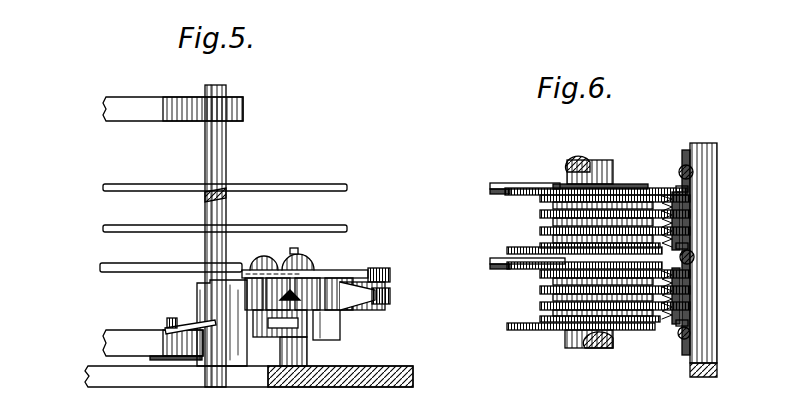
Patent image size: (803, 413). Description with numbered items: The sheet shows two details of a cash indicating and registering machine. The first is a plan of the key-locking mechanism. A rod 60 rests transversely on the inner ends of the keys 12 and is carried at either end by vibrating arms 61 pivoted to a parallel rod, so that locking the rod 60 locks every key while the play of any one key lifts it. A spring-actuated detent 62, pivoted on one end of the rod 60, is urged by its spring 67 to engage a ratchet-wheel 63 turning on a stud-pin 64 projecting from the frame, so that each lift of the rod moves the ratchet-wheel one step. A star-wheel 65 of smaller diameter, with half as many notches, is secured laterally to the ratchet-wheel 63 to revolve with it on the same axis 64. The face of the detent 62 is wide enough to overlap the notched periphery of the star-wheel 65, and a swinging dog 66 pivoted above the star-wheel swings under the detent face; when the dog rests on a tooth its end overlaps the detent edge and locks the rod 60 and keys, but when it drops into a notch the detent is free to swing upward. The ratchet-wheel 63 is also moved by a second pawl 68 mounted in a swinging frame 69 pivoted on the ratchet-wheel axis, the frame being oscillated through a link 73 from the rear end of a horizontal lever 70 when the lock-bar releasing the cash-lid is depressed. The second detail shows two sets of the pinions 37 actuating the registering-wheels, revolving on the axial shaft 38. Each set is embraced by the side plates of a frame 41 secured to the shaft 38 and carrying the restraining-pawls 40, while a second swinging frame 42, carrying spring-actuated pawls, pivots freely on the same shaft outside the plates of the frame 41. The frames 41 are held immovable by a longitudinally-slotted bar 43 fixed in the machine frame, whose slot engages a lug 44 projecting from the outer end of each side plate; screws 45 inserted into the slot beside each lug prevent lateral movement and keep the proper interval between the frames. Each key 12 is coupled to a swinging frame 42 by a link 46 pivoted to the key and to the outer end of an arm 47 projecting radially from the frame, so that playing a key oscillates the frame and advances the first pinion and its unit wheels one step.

In FIG. 5, the key 12 is at (258, 184).
In FIG. 5, the rod 60 is at (205, 150).
In FIG. 5, the vibrating arm 61 is at (173, 228).
In FIG. 5, the detent 62 is at (222, 323).
In FIG. 5, the ratchet-wheel 63 is at (355, 306).
In FIG. 5, the stud-pin 64 is at (312, 362).
In FIG. 5, the star-wheel 65 is at (334, 332).
In FIG. 5, the swinging dog 66 is at (272, 337).
In FIG. 5, the spring 67 is at (192, 322).
In FIG. 5, the pawl 68 is at (389, 297).
In FIG. 5, the swinging frame 69 is at (345, 270).
In FIG. 5, the horizontal lever 70 is at (148, 272).
In FIG. 5, the link 73 is at (263, 262).
In FIG. 6, the pinion 37 is at (540, 198).
In FIG. 6, the axial shaft 38 is at (580, 170).
In FIG. 6, the restraining-pawl 40 is at (651, 257).
In FIG. 6, the frame 41 is at (672, 192).
In FIG. 6, the swinging frame 42 is at (622, 185).
In FIG. 6, the longitudinally-slotted bar 43 is at (717, 157).
In FIG. 6, the lug 44 is at (688, 190).
In FIG. 6, the screw 45 is at (694, 172).
In FIG. 6, the link 46 is at (498, 192).
In FIG. 6, the arm 47 is at (520, 183).